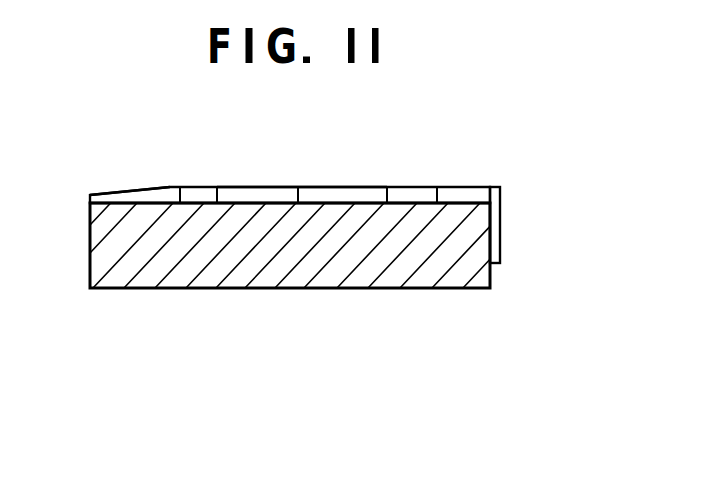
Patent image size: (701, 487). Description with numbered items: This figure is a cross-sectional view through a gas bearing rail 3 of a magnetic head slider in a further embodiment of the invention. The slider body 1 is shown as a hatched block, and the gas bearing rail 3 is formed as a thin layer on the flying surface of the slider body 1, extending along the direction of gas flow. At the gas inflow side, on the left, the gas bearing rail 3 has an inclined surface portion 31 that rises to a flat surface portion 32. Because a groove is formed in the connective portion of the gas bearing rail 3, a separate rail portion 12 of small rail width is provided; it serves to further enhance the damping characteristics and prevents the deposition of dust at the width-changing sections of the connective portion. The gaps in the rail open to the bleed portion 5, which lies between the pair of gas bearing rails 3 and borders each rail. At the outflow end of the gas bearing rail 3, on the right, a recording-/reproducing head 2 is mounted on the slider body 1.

The slider body 1 is at (235, 355).
The recording-/reproducing head 2 is at (502, 228).
The gas bearing rail 3 is at (461, 187).
The bleed portion 5 is at (298, 187).
The separate rail portion 12 is at (252, 192).
The inclined surface portion 31 is at (112, 192).
The flat surface portion 32 is at (358, 187).